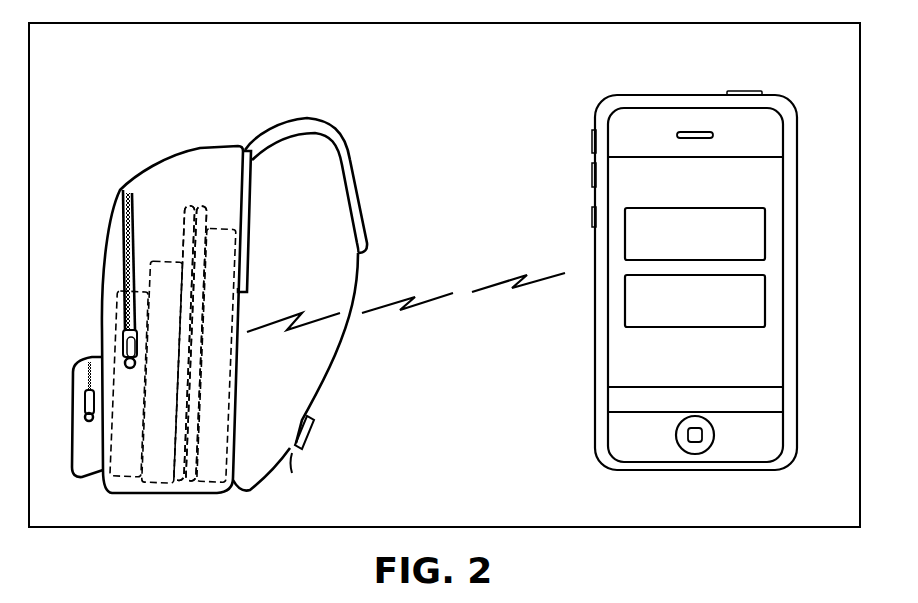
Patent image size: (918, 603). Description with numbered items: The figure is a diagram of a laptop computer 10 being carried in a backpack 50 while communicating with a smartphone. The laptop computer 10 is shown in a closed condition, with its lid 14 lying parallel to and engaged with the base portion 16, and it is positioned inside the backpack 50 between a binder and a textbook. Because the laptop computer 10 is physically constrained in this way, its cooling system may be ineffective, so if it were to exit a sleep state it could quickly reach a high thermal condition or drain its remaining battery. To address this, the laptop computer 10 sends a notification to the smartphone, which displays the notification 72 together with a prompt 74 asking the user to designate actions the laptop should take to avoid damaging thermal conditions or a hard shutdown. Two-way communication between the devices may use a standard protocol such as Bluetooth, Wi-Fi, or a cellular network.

The backpack 50 is at (119, 140).
The laptop computer 10 is at (198, 203).
The lid 14 is at (183, 238).
The base portion 16 is at (207, 218).
The notification 72 is at (668, 93).
The prompt 74 is at (767, 297).